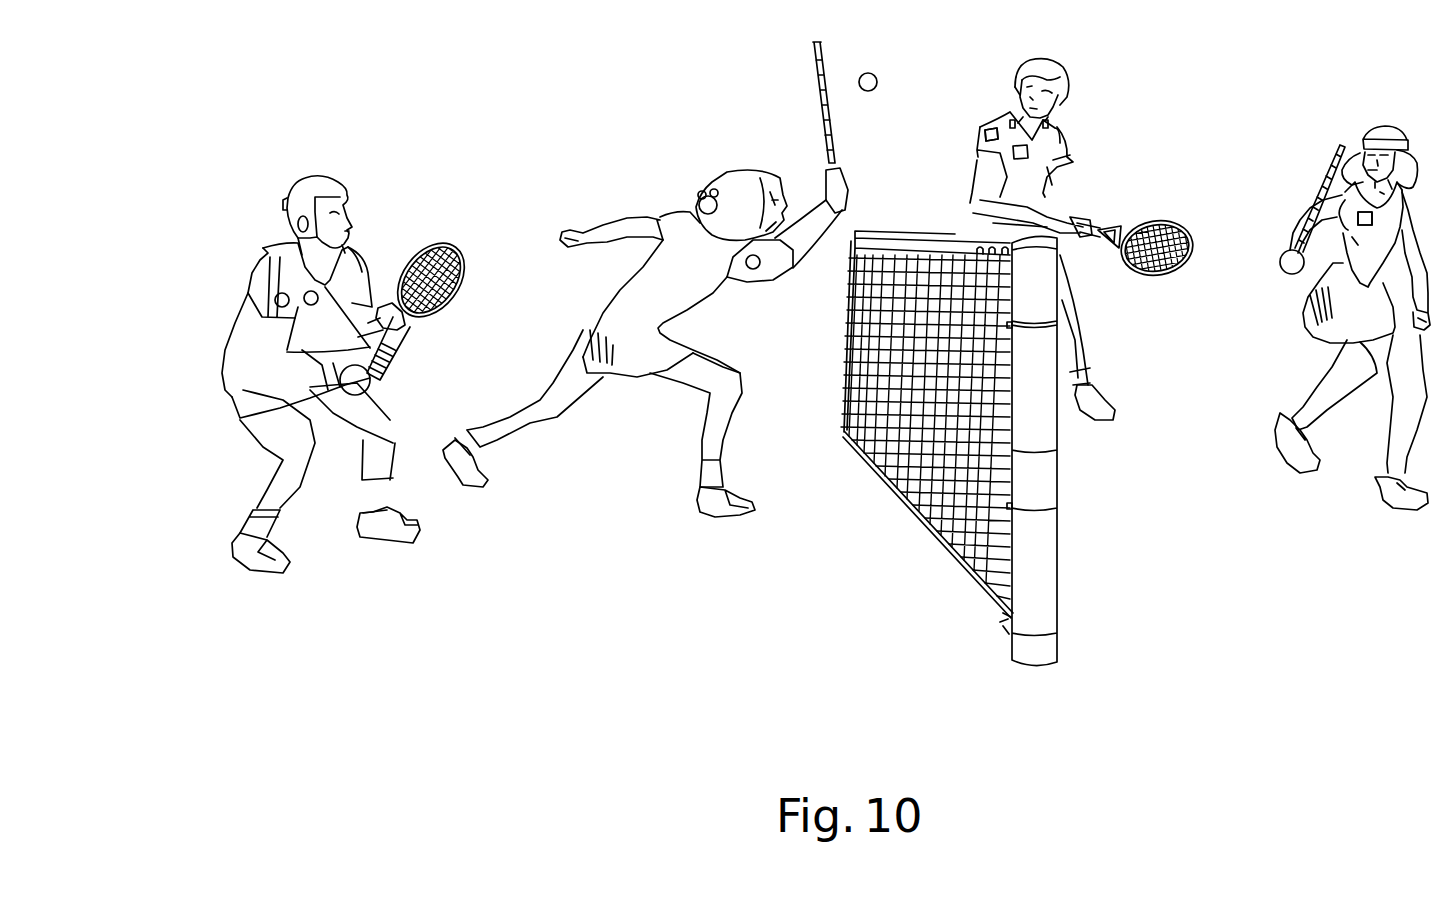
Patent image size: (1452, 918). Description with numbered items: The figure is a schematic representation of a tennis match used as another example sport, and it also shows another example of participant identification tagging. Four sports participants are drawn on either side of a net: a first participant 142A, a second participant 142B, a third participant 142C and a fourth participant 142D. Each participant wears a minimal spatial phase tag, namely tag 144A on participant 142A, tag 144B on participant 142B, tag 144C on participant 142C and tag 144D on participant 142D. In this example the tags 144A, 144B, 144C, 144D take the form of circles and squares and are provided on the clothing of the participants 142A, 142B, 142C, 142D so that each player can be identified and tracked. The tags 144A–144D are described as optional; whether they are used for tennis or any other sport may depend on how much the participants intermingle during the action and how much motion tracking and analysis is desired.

The sports participant 142A is at (302, 188).
The minimal spatial phase tag 144A is at (306, 292).
The sports participant 142B is at (738, 188).
The minimal spatial phase tag 144B is at (753, 270).
The sports participant 142C is at (1062, 69).
The minimal spatial phase tag 144C is at (1010, 118).
The sports participant 142D is at (1391, 126).
The minimal spatial phase tag 144D is at (1352, 188).